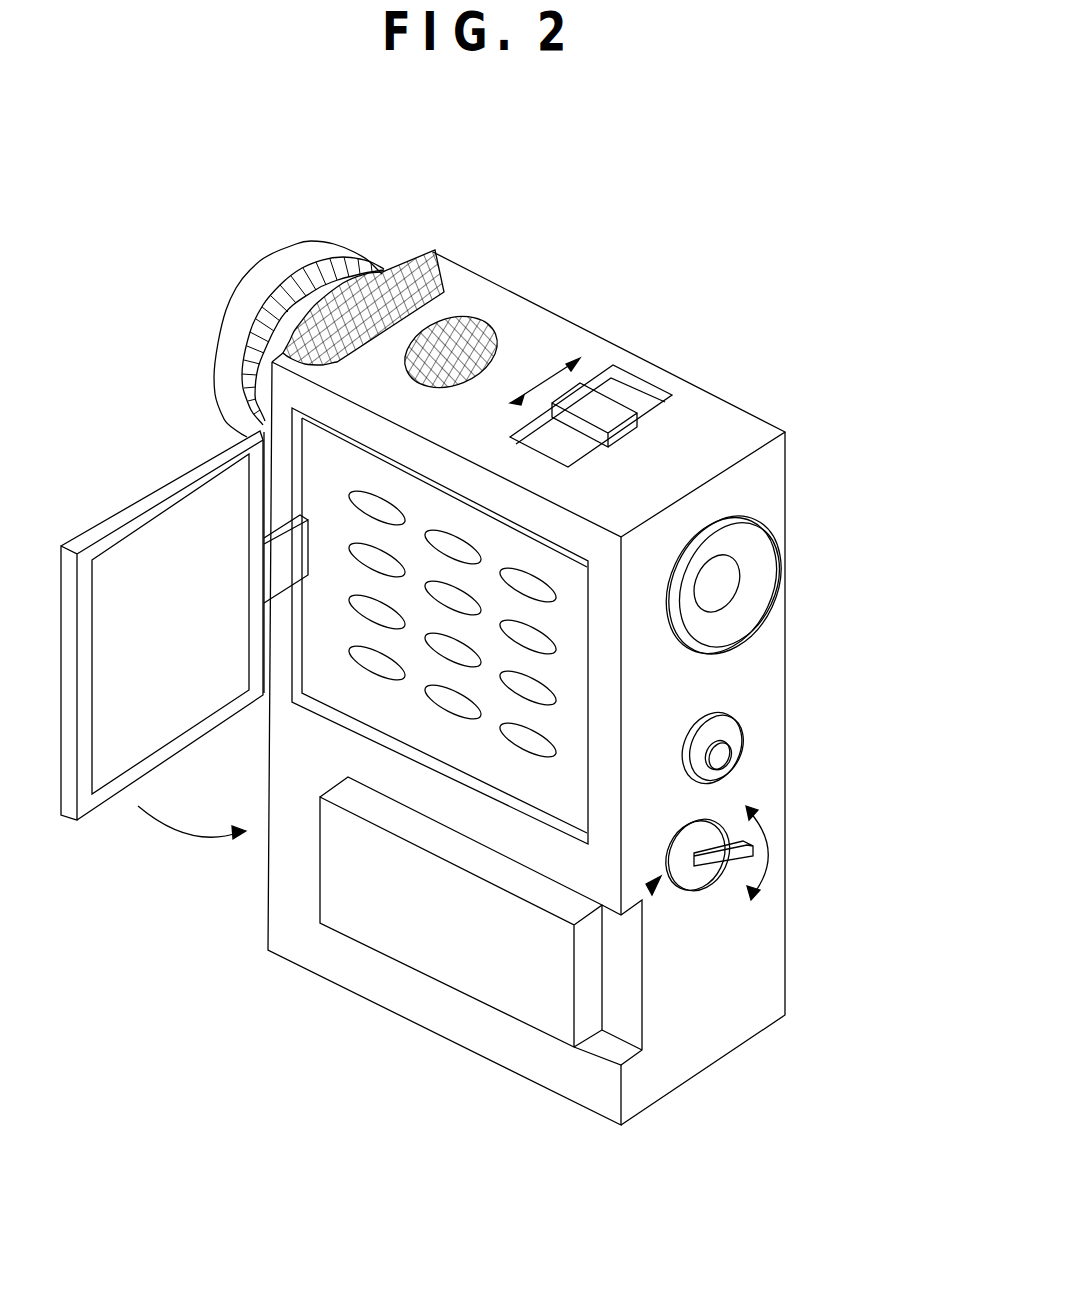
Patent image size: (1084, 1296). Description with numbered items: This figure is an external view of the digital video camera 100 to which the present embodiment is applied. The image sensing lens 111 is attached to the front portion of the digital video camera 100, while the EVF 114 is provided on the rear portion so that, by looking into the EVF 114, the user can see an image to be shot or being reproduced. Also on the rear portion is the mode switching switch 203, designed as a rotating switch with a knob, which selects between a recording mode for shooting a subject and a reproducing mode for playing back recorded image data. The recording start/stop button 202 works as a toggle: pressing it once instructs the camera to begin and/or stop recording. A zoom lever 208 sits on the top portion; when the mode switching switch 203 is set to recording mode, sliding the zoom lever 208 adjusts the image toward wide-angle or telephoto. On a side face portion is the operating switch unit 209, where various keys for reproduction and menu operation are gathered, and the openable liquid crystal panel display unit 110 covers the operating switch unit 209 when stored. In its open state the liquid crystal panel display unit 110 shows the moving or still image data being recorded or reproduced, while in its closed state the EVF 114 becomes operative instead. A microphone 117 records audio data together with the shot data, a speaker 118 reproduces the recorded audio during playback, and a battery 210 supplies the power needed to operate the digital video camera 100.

The digital video camera 100 is at (719, 1130).
The liquid crystal panel display unit 110 is at (150, 568).
The image sensing lens 111 is at (330, 284).
The microphone 117 is at (436, 280).
The speaker 118 is at (493, 327).
The zoom lever 208 is at (602, 407).
The EVF 114 is at (759, 564).
The recording start/stop button 202 is at (734, 740).
The mode switching switch 203 is at (699, 878).
The operating switch unit 209 is at (340, 693).
The battery 210 is at (462, 953).